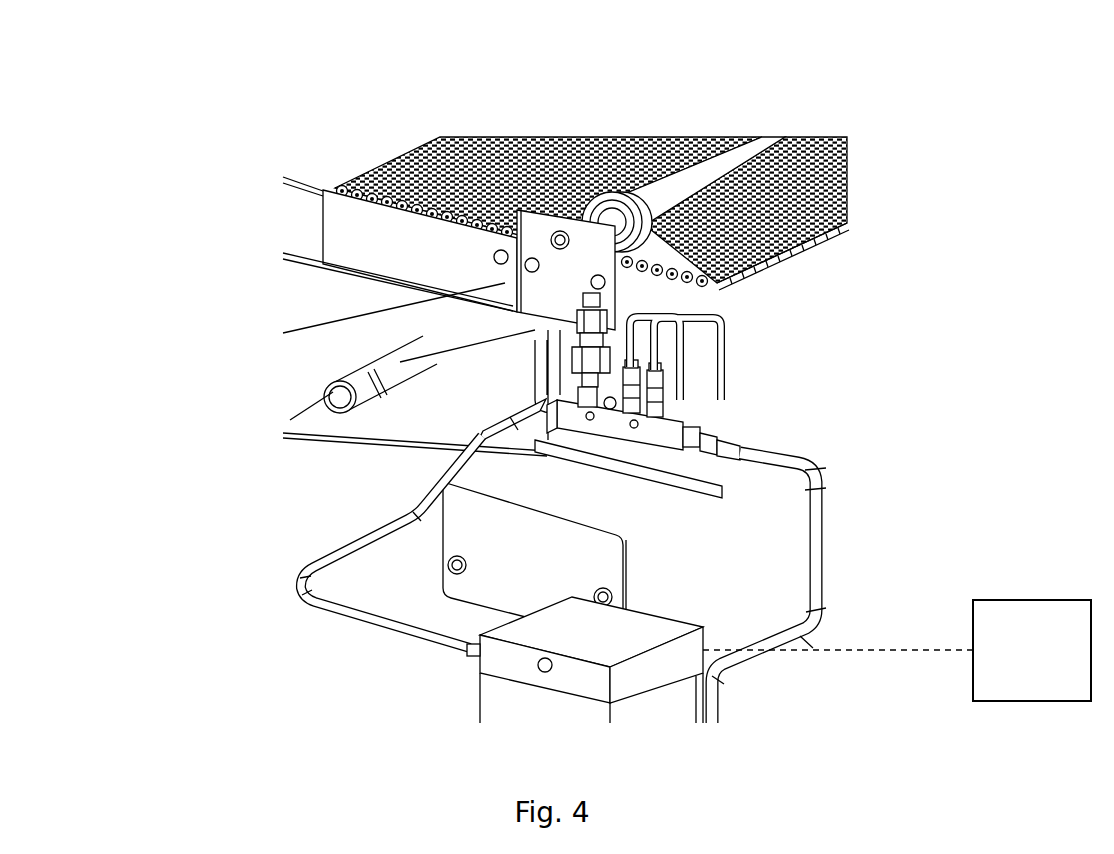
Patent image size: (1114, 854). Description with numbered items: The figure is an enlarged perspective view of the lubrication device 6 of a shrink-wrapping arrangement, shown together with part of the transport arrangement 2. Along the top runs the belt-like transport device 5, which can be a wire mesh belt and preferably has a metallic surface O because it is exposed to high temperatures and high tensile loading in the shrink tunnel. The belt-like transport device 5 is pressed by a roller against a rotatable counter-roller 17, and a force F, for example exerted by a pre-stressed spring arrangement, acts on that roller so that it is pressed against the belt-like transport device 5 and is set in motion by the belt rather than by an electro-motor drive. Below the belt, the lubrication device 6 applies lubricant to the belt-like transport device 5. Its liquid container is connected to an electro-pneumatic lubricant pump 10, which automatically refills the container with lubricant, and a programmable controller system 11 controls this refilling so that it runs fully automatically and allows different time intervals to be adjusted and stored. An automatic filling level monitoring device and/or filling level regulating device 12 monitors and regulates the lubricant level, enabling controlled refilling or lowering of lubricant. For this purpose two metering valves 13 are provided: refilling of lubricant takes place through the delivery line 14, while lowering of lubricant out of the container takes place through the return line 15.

The transport arrangement 2 is at (566, 242).
The belt-like transport device 5 is at (406, 176).
The lubrication device 6 is at (262, 485).
The electro-pneumatic lubricant pump 10 is at (572, 645).
The programmable controller system 11 is at (1018, 668).
The automatic filling level monitoring device and/or filling level regulating device 12 is at (748, 483).
The metering valves 13 is at (573, 383).
The delivery line 14 is at (813, 590).
The return line 15 is at (323, 561).
The rotatable counter-roller 17 is at (700, 177).
The metallic surface O is at (517, 150).
The force F is at (671, 48).